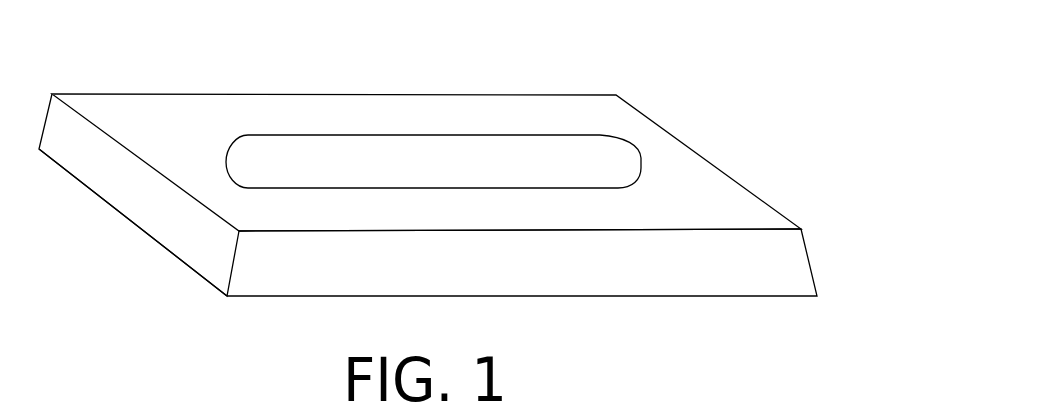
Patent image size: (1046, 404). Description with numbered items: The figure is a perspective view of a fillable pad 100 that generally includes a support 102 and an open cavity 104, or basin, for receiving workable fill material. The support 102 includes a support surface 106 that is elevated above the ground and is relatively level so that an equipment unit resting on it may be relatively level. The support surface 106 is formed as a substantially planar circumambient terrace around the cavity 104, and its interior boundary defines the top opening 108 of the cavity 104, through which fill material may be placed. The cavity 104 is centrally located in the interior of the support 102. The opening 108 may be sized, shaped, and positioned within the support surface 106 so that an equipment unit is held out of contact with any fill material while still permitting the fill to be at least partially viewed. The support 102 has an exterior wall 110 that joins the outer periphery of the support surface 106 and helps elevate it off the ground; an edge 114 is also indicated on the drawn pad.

The fillable pad 100 is at (425, 168).
The support 102 is at (186, 263).
The open cavity 104 is at (477, 121).
The support surface 106 is at (730, 195).
The top opening 108 is at (638, 157).
The exterior wall 110 is at (89, 137).
The edge 114 is at (107, 198).